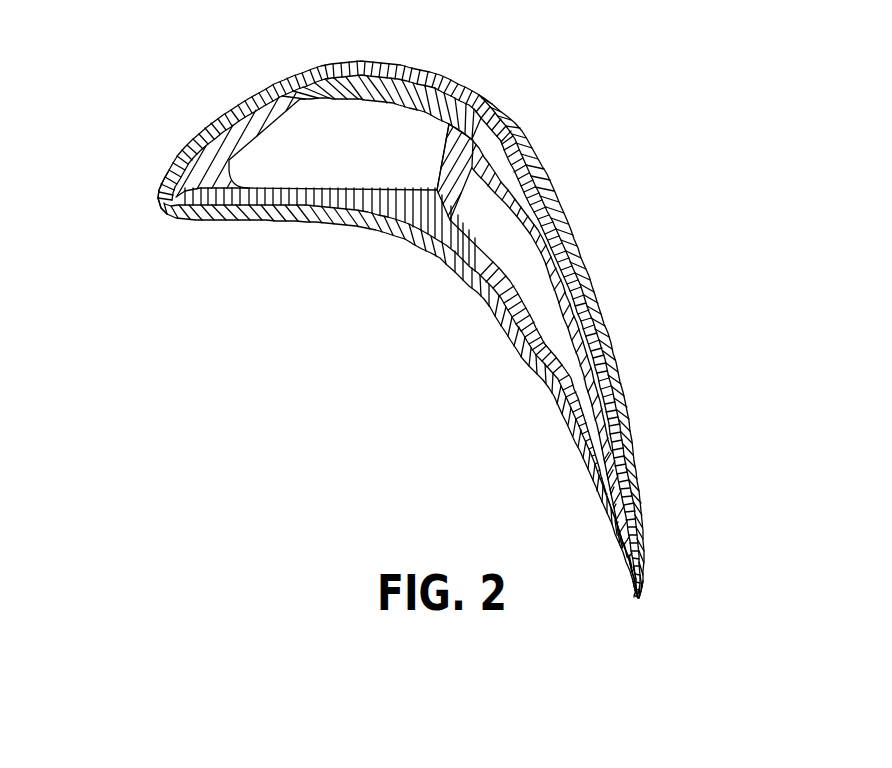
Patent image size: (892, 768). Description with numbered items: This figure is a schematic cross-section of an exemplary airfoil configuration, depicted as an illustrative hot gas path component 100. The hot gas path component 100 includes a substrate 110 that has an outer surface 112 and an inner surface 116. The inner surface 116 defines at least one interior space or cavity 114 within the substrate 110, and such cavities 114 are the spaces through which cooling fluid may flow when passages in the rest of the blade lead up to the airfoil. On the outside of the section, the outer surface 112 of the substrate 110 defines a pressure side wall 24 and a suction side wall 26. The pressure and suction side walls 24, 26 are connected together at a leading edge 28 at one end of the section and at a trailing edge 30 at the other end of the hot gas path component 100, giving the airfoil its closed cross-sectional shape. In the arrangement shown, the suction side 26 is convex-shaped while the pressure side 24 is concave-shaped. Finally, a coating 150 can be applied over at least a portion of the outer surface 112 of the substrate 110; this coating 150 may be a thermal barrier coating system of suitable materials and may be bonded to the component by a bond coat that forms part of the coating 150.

The hot gas path component 100 is at (652, 64).
The pressure side wall 24 is at (515, 142).
The suction side wall 26 is at (454, 272).
The leading edge 28 is at (161, 207).
The trailing edge 30 is at (638, 601).
The substrate 110 is at (463, 142).
The outer surface 112 is at (594, 356).
The cavity 114 is at (384, 122).
The inner surface 116 is at (508, 186).
The coating 150 is at (560, 231).